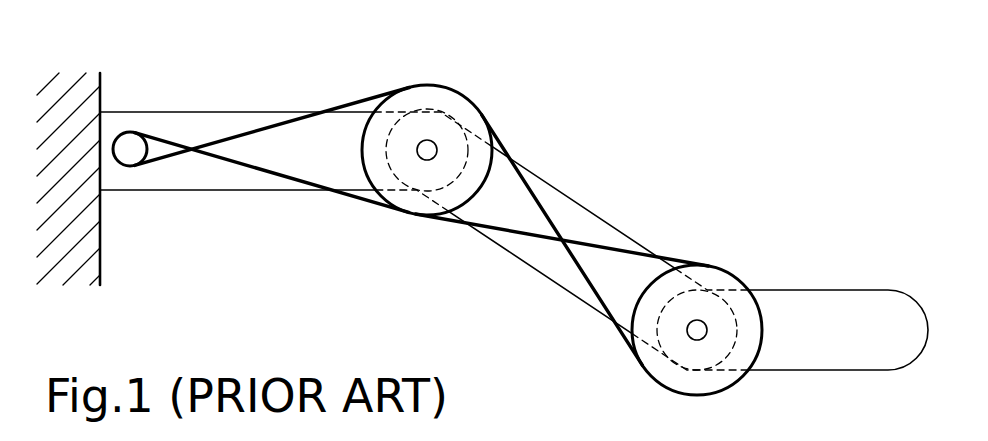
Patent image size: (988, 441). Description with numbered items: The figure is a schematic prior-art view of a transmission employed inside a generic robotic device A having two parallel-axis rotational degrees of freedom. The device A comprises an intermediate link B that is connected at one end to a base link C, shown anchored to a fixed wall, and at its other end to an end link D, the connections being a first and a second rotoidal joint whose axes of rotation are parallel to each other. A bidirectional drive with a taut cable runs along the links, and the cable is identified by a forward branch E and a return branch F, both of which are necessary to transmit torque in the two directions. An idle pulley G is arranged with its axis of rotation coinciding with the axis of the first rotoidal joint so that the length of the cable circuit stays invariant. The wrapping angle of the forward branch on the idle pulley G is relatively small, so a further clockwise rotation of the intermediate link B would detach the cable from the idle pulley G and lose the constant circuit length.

The robotic device A is at (482, 206).
The intermediate link B is at (572, 198).
The base link C is at (193, 123).
The end link D is at (858, 303).
The forward branch E is at (332, 193).
The return branch F is at (522, 172).
The idle pulley G is at (415, 100).